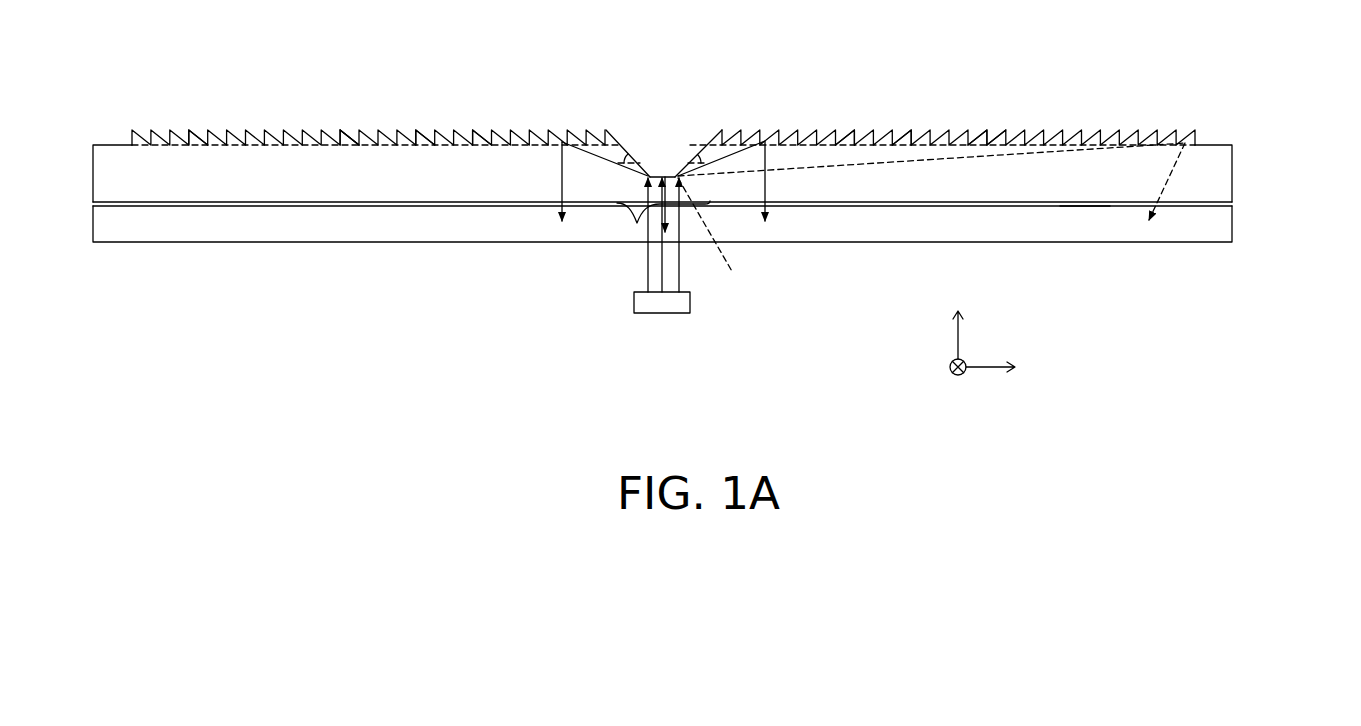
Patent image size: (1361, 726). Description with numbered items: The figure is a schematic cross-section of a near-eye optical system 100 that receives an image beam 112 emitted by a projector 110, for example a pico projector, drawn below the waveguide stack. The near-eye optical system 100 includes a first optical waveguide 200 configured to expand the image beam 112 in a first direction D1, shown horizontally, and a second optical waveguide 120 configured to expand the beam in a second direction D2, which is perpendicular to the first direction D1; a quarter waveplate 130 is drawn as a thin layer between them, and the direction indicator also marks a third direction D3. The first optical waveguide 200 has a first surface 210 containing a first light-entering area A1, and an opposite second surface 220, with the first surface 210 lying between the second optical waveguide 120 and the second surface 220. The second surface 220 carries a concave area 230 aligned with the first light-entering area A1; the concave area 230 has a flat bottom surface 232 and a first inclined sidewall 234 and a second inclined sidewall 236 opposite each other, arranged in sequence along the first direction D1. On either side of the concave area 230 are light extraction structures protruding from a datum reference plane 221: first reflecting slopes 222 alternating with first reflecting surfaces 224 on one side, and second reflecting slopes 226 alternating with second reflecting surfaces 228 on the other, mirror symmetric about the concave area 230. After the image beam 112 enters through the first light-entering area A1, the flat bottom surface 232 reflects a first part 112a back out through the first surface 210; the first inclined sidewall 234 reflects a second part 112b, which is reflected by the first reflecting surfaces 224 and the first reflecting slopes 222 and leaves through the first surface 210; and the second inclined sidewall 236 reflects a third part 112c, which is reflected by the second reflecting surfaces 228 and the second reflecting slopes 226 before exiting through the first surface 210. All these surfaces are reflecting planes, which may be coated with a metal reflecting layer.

The near-eye optical system 100 is at (1284, 367).
The projector 110 is at (690, 303).
The image beam 112 is at (667, 358).
The first part of the image beam 112a is at (665, 222).
The second part of the image beam 112b is at (607, 140).
The third part of the image beam 112c is at (727, 150).
The second optical waveguide 120 is at (1225, 223).
The quarter waveplate 130 is at (1230, 203).
The first optical waveguide 200 is at (1218, 175).
The first surface 210 is at (1085, 205).
The second surface 220 is at (1218, 141).
The datum reference plane 221 is at (218, 147).
The first reflecting slopes 222 is at (352, 138).
The first reflecting surfaces 224 is at (338, 138).
The second reflecting slopes 226 is at (977, 137).
The second reflecting surfaces 228 is at (988, 140).
The concave area 230 is at (658, 177).
The flat bottom surface 232 is at (653, 160).
The first inclined sidewall 234 is at (649, 157).
The second inclined sidewall 236 is at (688, 165).
The first light-entering area A1 is at (637, 223).
The first direction D1 is at (1004, 366).
The second direction D2 is at (945, 377).
The third direction D3 is at (959, 318).